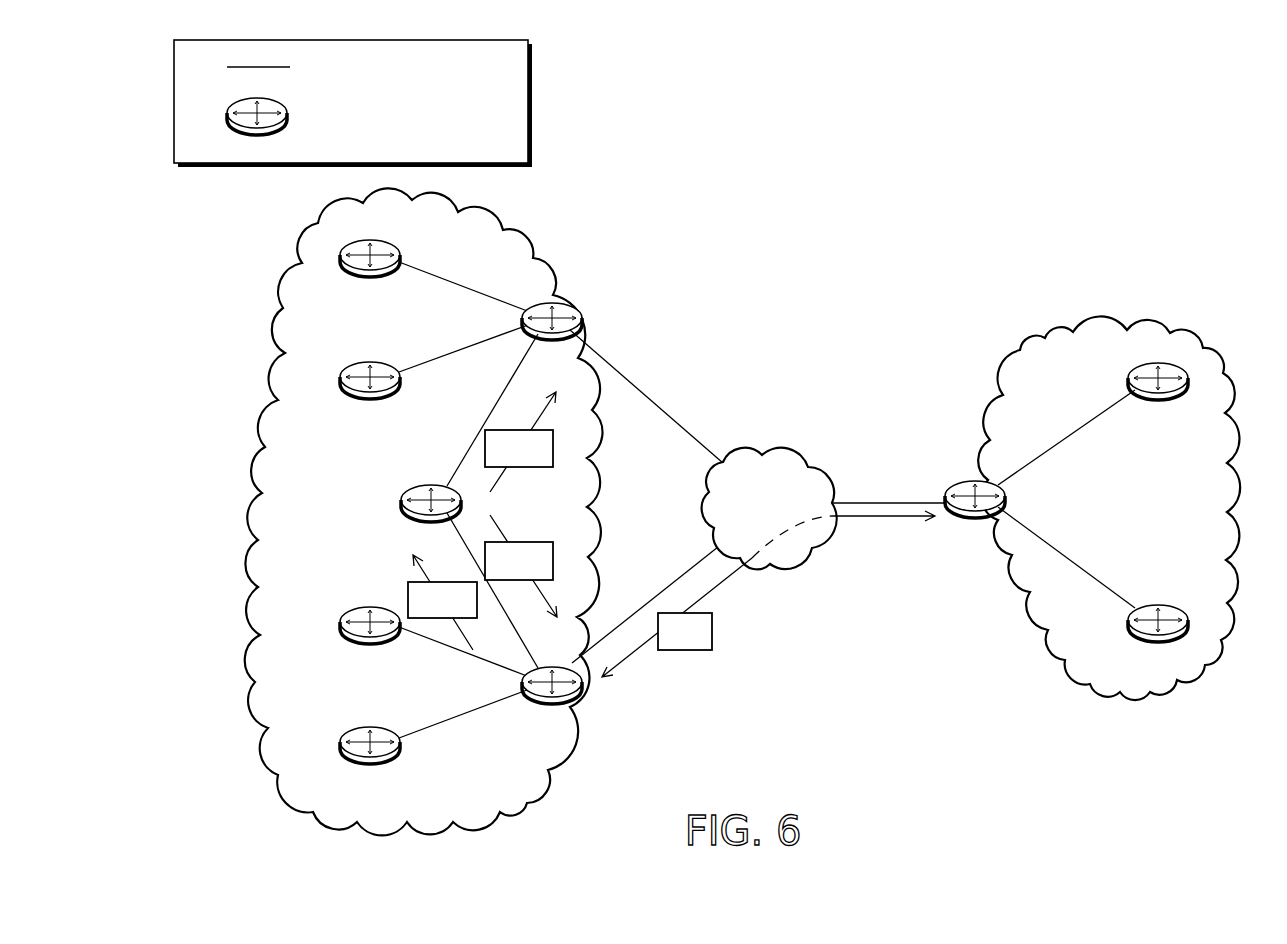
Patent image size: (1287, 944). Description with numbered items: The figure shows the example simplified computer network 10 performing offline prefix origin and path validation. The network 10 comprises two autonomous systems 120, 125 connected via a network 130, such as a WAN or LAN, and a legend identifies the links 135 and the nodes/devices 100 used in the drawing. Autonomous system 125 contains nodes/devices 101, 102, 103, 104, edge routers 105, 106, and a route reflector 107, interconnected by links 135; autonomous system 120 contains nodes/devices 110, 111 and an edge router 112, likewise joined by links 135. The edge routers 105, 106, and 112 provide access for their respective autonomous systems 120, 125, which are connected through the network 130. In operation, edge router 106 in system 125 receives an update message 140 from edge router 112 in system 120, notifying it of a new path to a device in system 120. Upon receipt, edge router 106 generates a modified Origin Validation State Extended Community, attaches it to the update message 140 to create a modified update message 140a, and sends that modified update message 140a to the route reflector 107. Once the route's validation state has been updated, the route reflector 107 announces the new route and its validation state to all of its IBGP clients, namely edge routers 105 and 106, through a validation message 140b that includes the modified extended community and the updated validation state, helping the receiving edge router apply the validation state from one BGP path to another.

The computer network 10 is at (1211, 87).
The nodes/devices 100 is at (358, 116).
The node/device 101 is at (370, 276).
The node/device 102 is at (370, 398).
The node/device 103 is at (370, 641).
The node/device 104 is at (370, 762).
The edge router 105 is at (552, 341).
The edge router 106 is at (546, 702).
The route reflector 107 is at (430, 518).
The node/device 110 is at (1158, 398).
The node/device 111 is at (1158, 641).
The edge router 112 is at (965, 517).
The autonomous system 120 is at (1081, 315).
The autonomous system 125 is at (518, 218).
The network 130 is at (757, 514).
The links 135 is at (681, 397).
The update message 140 is at (670, 642).
The modified update message 140a is at (424, 609).
The validation message 140b is at (500, 459).